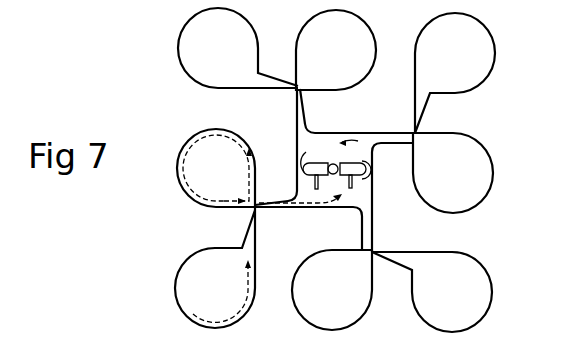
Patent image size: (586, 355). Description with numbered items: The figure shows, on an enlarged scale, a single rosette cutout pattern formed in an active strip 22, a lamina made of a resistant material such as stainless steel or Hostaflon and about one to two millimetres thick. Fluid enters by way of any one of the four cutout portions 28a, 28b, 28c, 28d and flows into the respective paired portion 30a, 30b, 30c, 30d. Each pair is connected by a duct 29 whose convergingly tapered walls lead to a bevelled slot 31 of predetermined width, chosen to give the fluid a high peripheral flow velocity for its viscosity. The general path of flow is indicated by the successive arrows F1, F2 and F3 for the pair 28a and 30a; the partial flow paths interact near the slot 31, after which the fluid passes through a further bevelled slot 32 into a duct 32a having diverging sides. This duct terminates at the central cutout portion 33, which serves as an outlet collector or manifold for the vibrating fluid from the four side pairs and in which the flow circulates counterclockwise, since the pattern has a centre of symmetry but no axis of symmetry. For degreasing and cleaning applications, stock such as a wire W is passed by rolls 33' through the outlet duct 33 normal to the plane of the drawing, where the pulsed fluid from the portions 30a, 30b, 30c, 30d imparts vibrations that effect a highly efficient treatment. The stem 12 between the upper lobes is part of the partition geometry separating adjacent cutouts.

The partition stem 12 is at (293, 95).
The active strip 22 is at (334, 249).
The cutout portion 28a is at (202, 297).
The cutout portion 28b is at (202, 70).
The cutout portion 28c is at (472, 45).
The cutout portion 28d is at (470, 303).
The duct 29 is at (250, 218).
The cutout portion 30a is at (202, 177).
The cutout portion 30b is at (355, 68).
The cutout portion 30c is at (478, 180).
The cutout portion 30d is at (320, 263).
The slot 31 is at (252, 217).
The slot 32 is at (278, 202).
The duct 32a is at (286, 200).
The central cutout portion 33 is at (355, 183).
The rolls 33' is at (373, 171).
The wire W is at (344, 160).
The arrow F1 is at (247, 312).
The arrow F2 is at (238, 147).
The arrow F3 is at (322, 218).